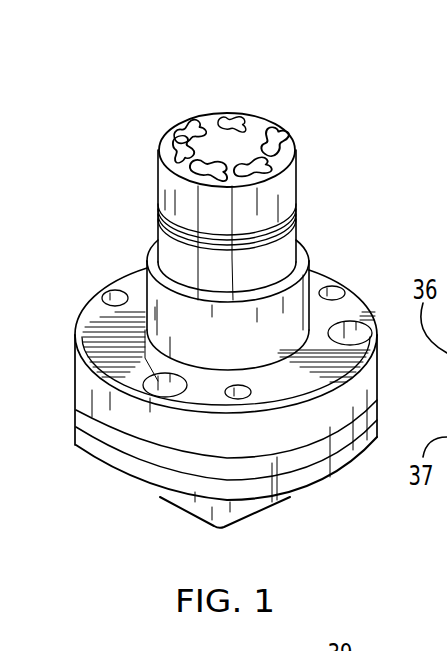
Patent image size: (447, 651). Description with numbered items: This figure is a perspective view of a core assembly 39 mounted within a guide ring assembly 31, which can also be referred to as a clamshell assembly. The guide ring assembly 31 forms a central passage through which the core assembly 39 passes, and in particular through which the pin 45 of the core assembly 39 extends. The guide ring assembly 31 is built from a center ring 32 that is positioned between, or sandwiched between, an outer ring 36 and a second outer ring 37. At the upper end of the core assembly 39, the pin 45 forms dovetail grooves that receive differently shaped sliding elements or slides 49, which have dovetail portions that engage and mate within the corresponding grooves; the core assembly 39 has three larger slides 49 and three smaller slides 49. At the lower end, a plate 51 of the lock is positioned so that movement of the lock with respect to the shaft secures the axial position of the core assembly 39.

The guide ring assembly 31 is at (360, 278).
The center ring 32 is at (75, 412).
The outer ring 36 is at (83, 370).
The outer ring 37 is at (86, 444).
The core assembly 39 is at (276, 101).
The pin 45 is at (217, 142).
The slides 49 is at (181, 124).
The plate 51 is at (199, 512).